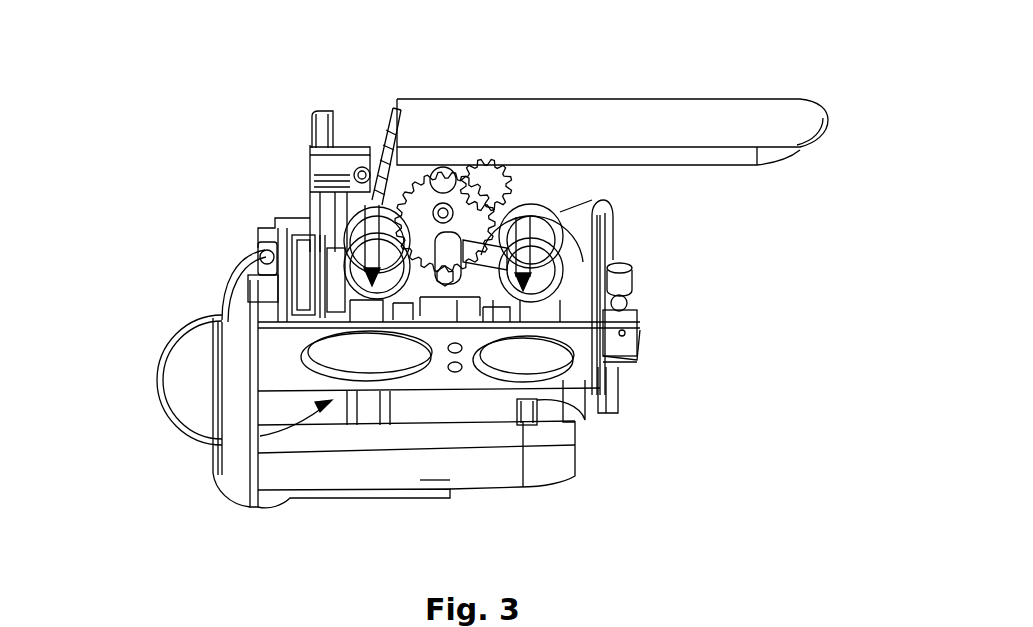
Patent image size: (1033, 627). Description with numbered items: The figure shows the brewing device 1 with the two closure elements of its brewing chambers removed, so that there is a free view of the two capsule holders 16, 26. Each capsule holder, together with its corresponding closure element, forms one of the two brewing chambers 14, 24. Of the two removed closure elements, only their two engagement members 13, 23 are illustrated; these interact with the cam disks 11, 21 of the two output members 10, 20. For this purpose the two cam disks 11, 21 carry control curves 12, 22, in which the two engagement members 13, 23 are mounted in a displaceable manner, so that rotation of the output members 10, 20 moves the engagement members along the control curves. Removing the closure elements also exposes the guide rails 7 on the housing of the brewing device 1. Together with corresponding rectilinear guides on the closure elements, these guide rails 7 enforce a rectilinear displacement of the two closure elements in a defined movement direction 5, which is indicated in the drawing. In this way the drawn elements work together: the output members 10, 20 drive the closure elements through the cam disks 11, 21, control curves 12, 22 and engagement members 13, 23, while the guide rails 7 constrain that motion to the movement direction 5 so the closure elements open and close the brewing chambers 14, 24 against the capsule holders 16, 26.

The brewing device 1 is at (258, 122).
The movement direction 5 is at (470, 300).
The guide rails 7 is at (300, 366).
The output member 10 is at (557, 207).
The cam disk 11 is at (565, 231).
The control curve 12 is at (550, 262).
The engagement member 13 is at (637, 354).
The brewing chamber 14 is at (547, 405).
The capsule holder 16 is at (610, 364).
The output member 20 is at (330, 218).
The cam disk 21 is at (345, 296).
The control curve 22 is at (245, 487).
The engagement member 23 is at (355, 284).
The brewing chamber 24 is at (260, 436).
The capsule holder 26 is at (250, 362).